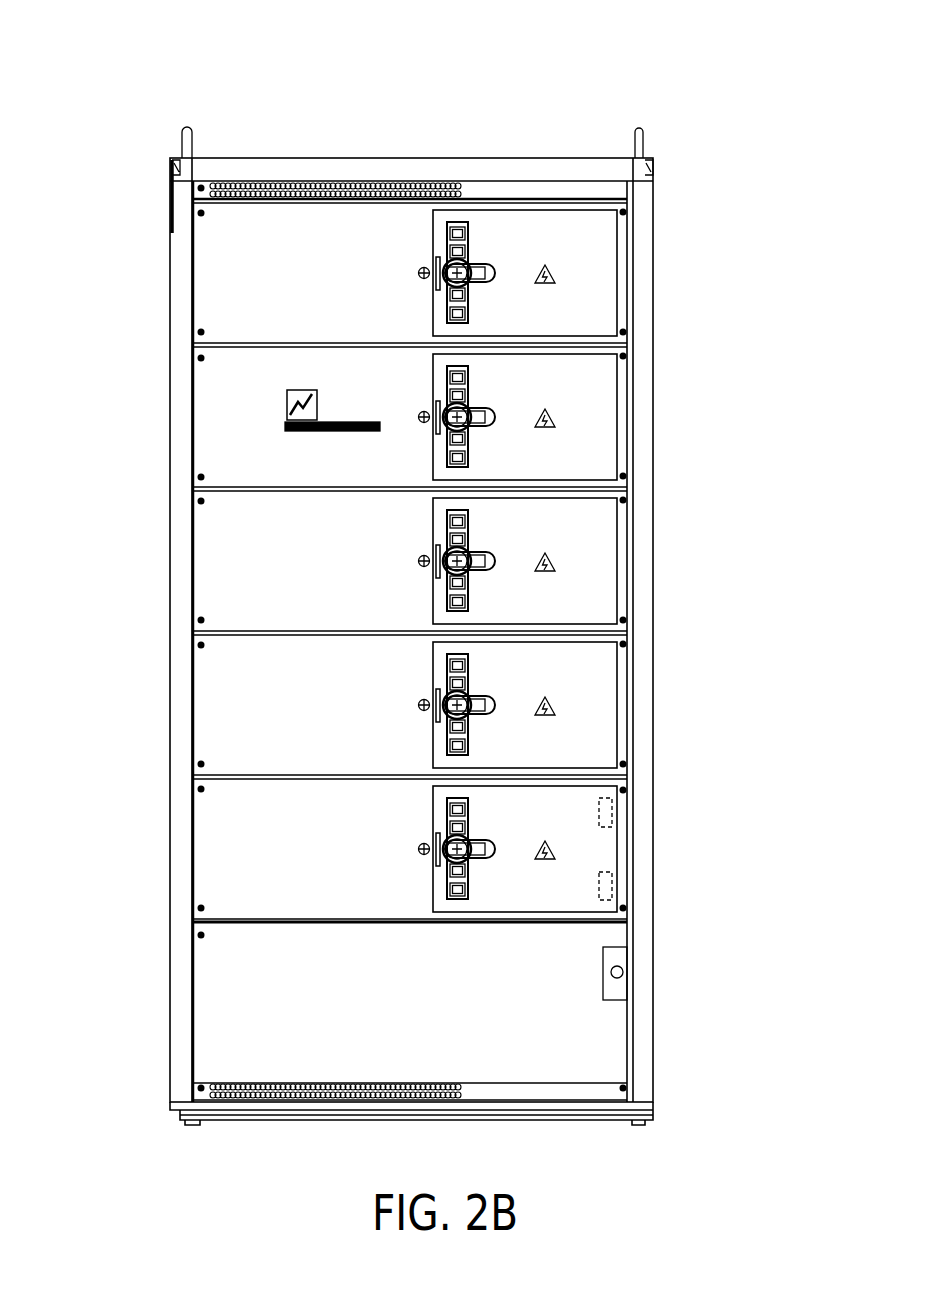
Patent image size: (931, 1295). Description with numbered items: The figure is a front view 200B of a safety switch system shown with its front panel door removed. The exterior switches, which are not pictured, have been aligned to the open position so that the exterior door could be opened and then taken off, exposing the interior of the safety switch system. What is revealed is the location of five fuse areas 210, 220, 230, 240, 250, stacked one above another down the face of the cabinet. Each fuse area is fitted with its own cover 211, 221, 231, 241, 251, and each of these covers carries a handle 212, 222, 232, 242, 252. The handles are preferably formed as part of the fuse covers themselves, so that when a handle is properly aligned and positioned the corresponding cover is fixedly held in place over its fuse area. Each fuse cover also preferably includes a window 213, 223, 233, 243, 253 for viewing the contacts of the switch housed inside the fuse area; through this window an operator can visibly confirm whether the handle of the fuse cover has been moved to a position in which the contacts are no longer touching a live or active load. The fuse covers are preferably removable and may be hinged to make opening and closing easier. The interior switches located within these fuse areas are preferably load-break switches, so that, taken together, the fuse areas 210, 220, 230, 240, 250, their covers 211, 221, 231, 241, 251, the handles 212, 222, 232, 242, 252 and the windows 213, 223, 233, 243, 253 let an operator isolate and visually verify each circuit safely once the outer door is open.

The front view 200B is at (135, 80).
The fuse area 210 is at (517, 240).
The cover 211 is at (568, 260).
The handle 212 is at (490, 281).
The window 213 is at (450, 312).
The fuse area 220 is at (517, 384).
The cover 221 is at (568, 404).
The handle 222 is at (490, 425).
The window 223 is at (450, 456).
The fuse area 230 is at (517, 528).
The cover 231 is at (568, 548).
The handle 232 is at (490, 569).
The window 233 is at (450, 600).
The fuse area 240 is at (517, 672).
The cover 241 is at (568, 692).
The handle 242 is at (490, 713).
The window 243 is at (450, 744).
The fuse area 250 is at (517, 816).
The cover 251 is at (562, 845).
The handle 252 is at (490, 857).
The window 253 is at (450, 888).